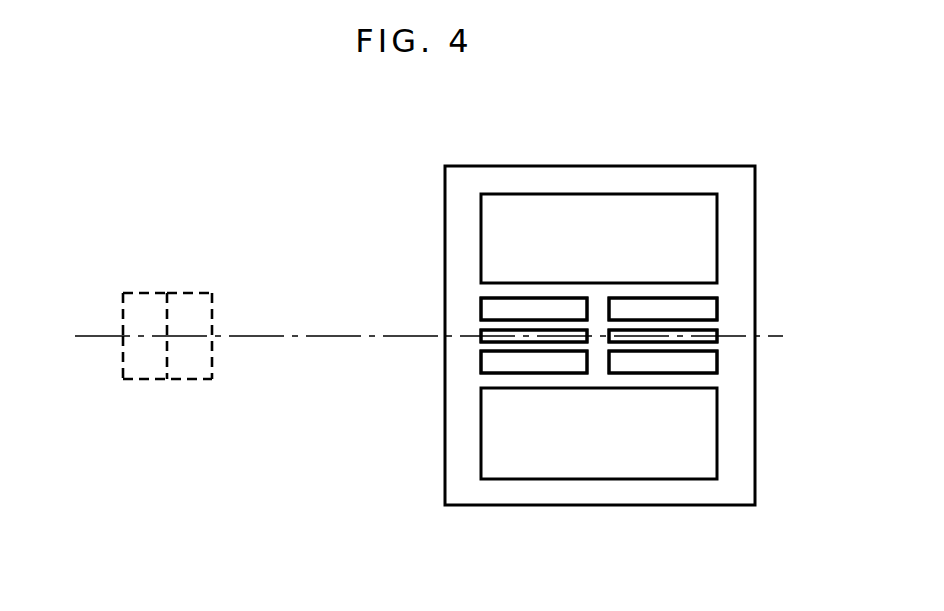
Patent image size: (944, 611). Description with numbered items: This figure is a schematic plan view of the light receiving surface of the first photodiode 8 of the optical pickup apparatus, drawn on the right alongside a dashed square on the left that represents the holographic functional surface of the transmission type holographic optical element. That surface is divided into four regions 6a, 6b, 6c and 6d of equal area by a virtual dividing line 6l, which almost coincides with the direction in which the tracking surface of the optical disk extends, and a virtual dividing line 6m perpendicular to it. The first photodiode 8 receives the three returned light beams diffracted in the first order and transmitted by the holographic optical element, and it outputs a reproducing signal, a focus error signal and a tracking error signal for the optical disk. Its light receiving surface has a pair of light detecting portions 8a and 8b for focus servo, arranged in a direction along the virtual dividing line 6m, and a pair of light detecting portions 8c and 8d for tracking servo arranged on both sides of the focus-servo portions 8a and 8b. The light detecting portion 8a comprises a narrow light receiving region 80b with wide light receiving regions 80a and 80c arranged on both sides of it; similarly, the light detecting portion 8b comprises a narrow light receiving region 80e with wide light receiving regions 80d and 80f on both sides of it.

The region of holographic functional surface 6a is at (210, 370).
The region of holographic functional surface 6b is at (188, 292).
The region of holographic functional surface 6c is at (143, 292).
The region of holographic functional surface 6d is at (123, 367).
The virtual dividing line 6m is at (138, 334).
The virtual dividing line 6l is at (167, 383).
The first photodiode 8 is at (661, 510).
The light detecting portion for focus servo 8a is at (377, 293).
The light detecting portion for focus servo 8b is at (811, 288).
The light detecting portion for tracking servo 8c is at (653, 212).
The light detecting portion for tracking servo 8d is at (598, 456).
The wide light receiving region 80a is at (485, 311).
The narrow light receiving region 80b is at (481, 339).
The wide light receiving region 80c is at (485, 364).
The wide light receiving region 80d is at (710, 312).
The narrow light receiving region 80e is at (717, 340).
The wide light receiving region 80f is at (710, 363).